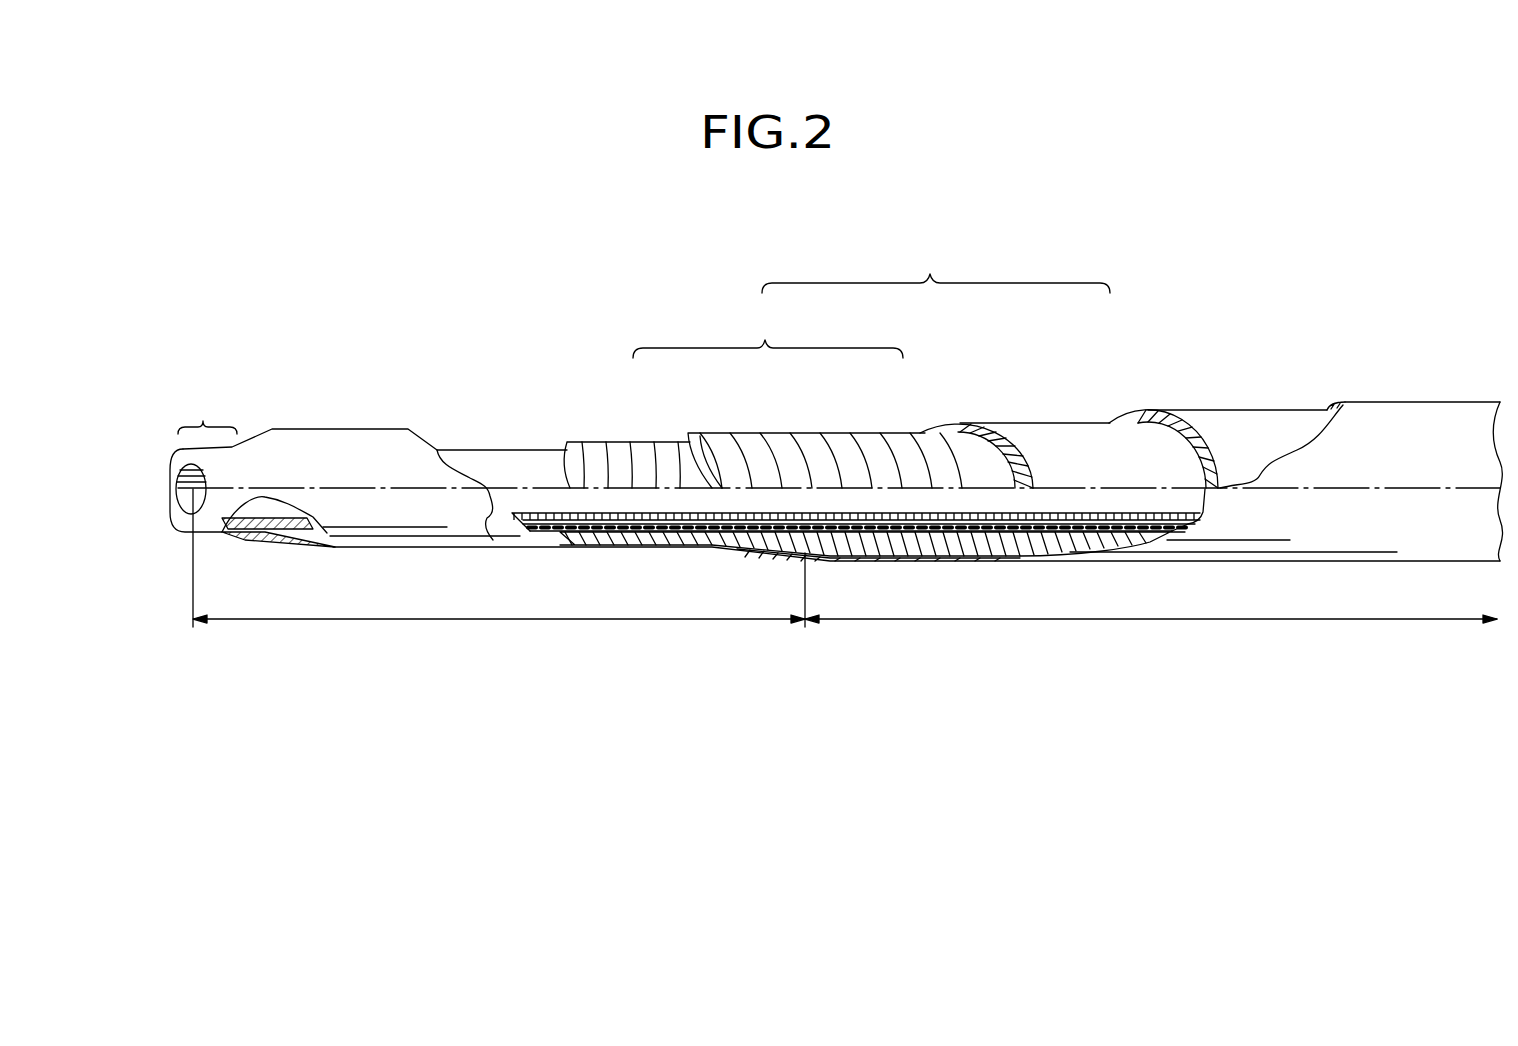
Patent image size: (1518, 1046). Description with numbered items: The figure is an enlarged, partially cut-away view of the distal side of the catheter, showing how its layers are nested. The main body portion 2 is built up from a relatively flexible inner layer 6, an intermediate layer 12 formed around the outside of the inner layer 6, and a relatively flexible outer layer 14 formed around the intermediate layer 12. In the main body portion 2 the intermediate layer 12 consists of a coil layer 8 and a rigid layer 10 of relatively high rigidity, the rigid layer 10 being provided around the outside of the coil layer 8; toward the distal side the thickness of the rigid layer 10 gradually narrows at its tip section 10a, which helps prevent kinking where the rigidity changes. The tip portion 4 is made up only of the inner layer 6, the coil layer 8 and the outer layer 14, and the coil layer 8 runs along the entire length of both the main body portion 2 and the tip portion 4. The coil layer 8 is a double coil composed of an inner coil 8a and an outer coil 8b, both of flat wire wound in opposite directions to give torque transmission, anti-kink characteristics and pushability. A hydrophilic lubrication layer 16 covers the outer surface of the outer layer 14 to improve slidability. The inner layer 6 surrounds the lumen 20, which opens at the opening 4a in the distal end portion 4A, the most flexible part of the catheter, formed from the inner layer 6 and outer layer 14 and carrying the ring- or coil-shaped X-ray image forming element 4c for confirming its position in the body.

The main body portion 2 is at (916, 604).
The tip portion 4 is at (499, 576).
The opening 4a is at (170, 455).
The distal end portion 4A is at (203, 421).
The X-ray image forming element 4c is at (225, 538).
The inner layer 6 is at (547, 511).
The coil layer 8 is at (768, 332).
The inner coil 8a is at (622, 452).
The outer coil 8b is at (862, 452).
The rigid layer 10 is at (1055, 422).
The tip section 10a is at (845, 551).
The intermediate layer 12 is at (936, 266).
The outer layer 14 is at (1258, 410).
The hydrophilic lubrication layer 16 is at (1410, 400).
The lumen 20 is at (493, 540).